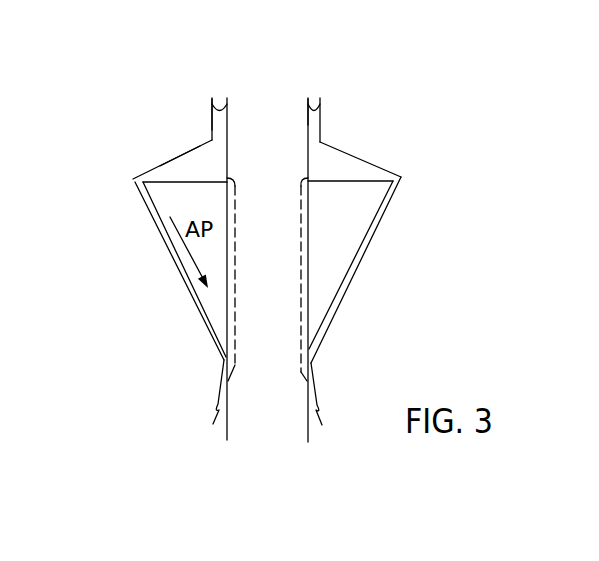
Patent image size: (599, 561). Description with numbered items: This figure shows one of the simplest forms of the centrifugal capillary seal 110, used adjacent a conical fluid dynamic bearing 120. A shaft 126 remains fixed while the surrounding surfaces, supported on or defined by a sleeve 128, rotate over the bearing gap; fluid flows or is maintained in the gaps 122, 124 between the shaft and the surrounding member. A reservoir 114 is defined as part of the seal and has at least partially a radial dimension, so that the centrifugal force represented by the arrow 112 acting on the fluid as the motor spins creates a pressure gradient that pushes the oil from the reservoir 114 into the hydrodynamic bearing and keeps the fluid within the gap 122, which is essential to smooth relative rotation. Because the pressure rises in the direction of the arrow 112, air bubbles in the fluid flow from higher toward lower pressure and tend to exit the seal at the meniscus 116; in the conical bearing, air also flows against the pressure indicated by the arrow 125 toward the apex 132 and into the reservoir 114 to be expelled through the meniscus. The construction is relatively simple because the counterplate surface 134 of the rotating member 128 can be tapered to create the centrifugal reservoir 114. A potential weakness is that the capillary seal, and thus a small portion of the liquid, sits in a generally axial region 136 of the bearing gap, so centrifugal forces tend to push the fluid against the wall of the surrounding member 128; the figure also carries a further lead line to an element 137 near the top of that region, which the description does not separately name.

The centrifugal capillary seal 110 is at (336, 122).
The arrow representing centrifugal force 112 is at (337, 143).
The reservoir 114 is at (330, 168).
The meniscus 116 is at (314, 100).
The conical fluid dynamic bearing 120 is at (352, 245).
The gap 122 is at (188, 283).
The gap 124 is at (236, 287).
The arrow indicating pressure 125 is at (183, 247).
The shaft 126 is at (267, 406).
The sleeve 128 is at (108, 257).
The apex 132 is at (133, 179).
The counterplate surface 134 is at (164, 160).
The axial region 136 is at (232, 125).
The tube top 137 is at (212, 126).